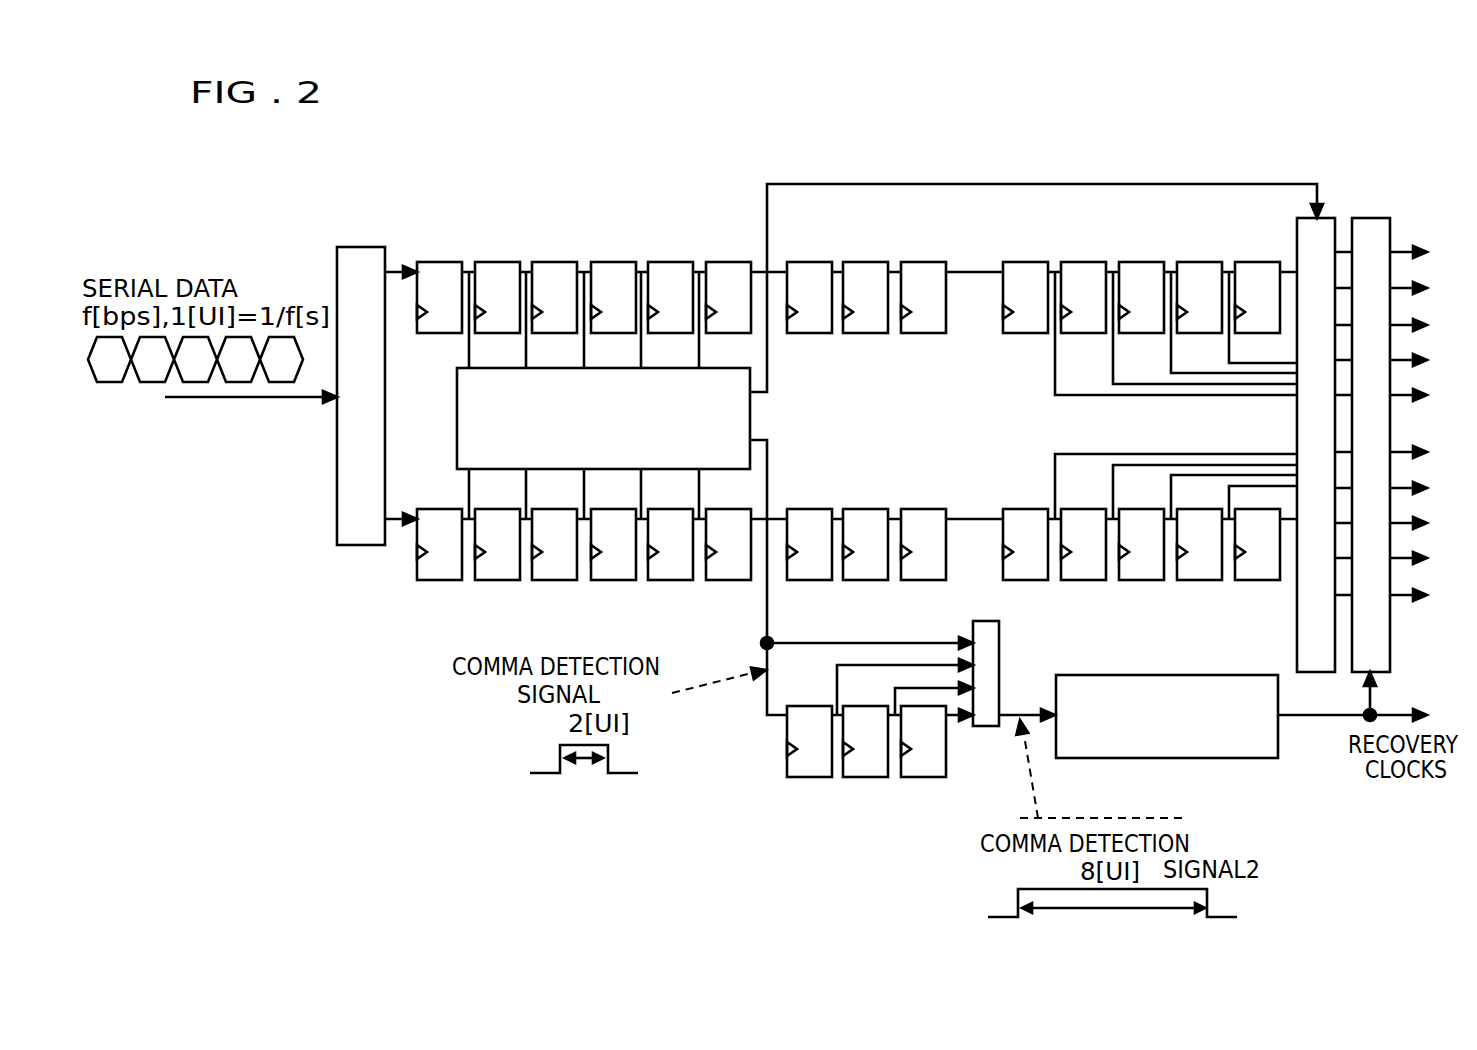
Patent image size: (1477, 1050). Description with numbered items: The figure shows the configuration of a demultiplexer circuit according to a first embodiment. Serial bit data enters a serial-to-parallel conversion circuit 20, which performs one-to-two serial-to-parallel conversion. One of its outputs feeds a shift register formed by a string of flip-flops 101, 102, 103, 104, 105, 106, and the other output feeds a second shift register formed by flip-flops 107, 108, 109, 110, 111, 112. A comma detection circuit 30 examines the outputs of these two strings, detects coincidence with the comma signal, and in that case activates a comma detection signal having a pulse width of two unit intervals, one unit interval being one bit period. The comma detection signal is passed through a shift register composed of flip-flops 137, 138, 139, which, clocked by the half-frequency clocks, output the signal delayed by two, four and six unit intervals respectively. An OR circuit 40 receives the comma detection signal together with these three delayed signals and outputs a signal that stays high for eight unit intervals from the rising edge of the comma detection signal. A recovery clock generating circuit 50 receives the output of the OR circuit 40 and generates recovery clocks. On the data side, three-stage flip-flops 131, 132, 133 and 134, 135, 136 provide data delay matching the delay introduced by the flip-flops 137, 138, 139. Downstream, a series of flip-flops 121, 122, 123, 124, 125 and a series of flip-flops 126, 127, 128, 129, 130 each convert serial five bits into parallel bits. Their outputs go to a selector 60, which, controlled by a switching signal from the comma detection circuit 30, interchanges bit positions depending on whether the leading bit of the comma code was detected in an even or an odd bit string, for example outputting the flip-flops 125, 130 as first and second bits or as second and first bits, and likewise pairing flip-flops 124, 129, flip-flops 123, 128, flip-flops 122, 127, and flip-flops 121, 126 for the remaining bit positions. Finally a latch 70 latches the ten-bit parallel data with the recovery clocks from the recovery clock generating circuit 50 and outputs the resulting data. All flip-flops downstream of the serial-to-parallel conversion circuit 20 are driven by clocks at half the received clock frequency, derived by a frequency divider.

The serial-to-parallel conversion circuit 20 is at (360, 247).
The comma detection circuit 30 is at (457, 428).
The OR circuit 40 is at (986, 726).
The recovery clock generating circuit 50 is at (1255, 758).
The selector 60 is at (1326, 218).
The latch 70 is at (1380, 218).
The flip-flop 101 is at (427, 262).
The flip-flop 102 is at (485, 262).
The flip-flop 103 is at (542, 262).
The flip-flop 104 is at (601, 262).
The flip-flop 105 is at (658, 262).
The flip-flop 106 is at (716, 262).
The flip-flop 107 is at (425, 580).
The flip-flop 108 is at (483, 580).
The flip-flop 109 is at (540, 580).
The flip-flop 110 is at (599, 580).
The flip-flop 111 is at (656, 580).
The flip-flop 112 is at (714, 580).
The flip-flop 121 is at (1013, 262).
The flip-flop 122 is at (1071, 262).
The flip-flop 123 is at (1129, 262).
The flip-flop 124 is at (1187, 262).
The flip-flop 125 is at (1245, 262).
The flip-flop 126 is at (1011, 580).
The flip-flop 127 is at (1069, 580).
The flip-flop 128 is at (1127, 580).
The flip-flop 129 is at (1185, 580).
The flip-flop 130 is at (1243, 580).
The flip-flop 131 is at (797, 262).
The flip-flop 132 is at (853, 262).
The flip-flop 133 is at (911, 262).
The flip-flop 134 is at (795, 580).
The flip-flop 135 is at (851, 580).
The flip-flop 136 is at (909, 580).
The flip-flop 137 is at (795, 777).
The flip-flop 138 is at (851, 777).
The flip-flop 139 is at (909, 777).